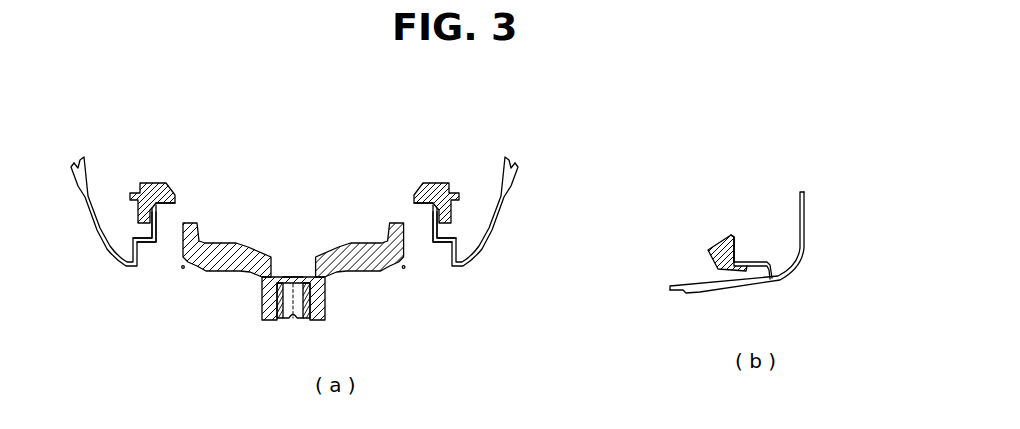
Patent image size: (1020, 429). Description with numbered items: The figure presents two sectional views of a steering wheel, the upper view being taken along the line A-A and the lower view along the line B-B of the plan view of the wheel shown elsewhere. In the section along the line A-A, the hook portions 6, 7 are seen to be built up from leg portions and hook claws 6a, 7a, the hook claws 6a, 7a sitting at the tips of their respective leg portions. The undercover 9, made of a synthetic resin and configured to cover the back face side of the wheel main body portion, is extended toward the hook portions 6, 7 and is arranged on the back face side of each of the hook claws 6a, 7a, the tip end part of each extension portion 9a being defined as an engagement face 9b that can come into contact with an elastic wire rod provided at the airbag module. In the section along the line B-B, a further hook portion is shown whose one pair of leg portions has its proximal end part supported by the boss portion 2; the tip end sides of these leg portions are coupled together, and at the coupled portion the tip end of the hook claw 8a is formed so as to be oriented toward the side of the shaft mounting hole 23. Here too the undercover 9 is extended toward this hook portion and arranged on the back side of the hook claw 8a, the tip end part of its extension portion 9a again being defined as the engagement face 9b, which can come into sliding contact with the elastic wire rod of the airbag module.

The boss portion 2 is at (340, 272).
The shaft mounting hole 23 is at (288, 277).
The hook portion 6 is at (160, 172).
The hook claw 6a is at (153, 182).
The hook portion 7 is at (439, 172).
The hook claw 7a is at (437, 182).
The hook claw 8a is at (713, 247).
The undercover 9 is at (106, 252).
The extension portion 9a is at (155, 243).
The engagement face 9b is at (172, 207).